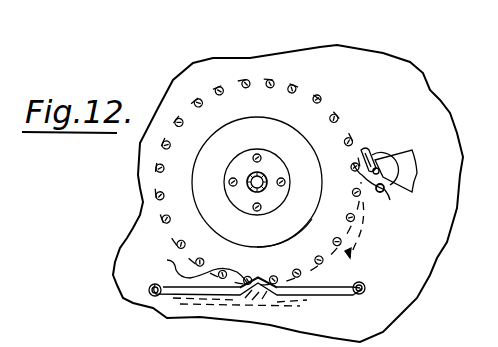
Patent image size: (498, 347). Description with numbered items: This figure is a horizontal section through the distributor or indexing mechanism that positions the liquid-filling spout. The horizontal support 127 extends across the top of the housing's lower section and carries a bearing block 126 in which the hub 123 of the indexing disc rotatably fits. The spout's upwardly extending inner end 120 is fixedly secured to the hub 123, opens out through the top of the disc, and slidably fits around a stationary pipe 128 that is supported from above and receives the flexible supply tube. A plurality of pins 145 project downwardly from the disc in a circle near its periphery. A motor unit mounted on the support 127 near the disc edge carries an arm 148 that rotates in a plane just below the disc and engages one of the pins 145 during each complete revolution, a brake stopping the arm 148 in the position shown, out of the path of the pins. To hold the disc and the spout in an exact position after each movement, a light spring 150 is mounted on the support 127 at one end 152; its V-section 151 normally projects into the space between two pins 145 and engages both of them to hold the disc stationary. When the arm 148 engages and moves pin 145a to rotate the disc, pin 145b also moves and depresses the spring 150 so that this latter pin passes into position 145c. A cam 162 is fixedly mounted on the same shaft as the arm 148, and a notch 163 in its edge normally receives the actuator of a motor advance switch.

The horizontal support 127 is at (222, 67).
The pins 145 is at (319, 98).
The pin 145a is at (355, 163).
The pin 145b is at (290, 240).
The pin position 145c is at (185, 275).
The arm 148 is at (375, 151).
The cam 162 is at (383, 157).
The notch 163 is at (384, 188).
The stationary pipe 128 is at (263, 175).
The inner end 120 is at (252, 177).
The hub 123 is at (233, 190).
The bearing block 126 is at (203, 203).
The V-section 151 is at (256, 275).
The light spring 150 is at (317, 296).
The end 152 is at (364, 285).